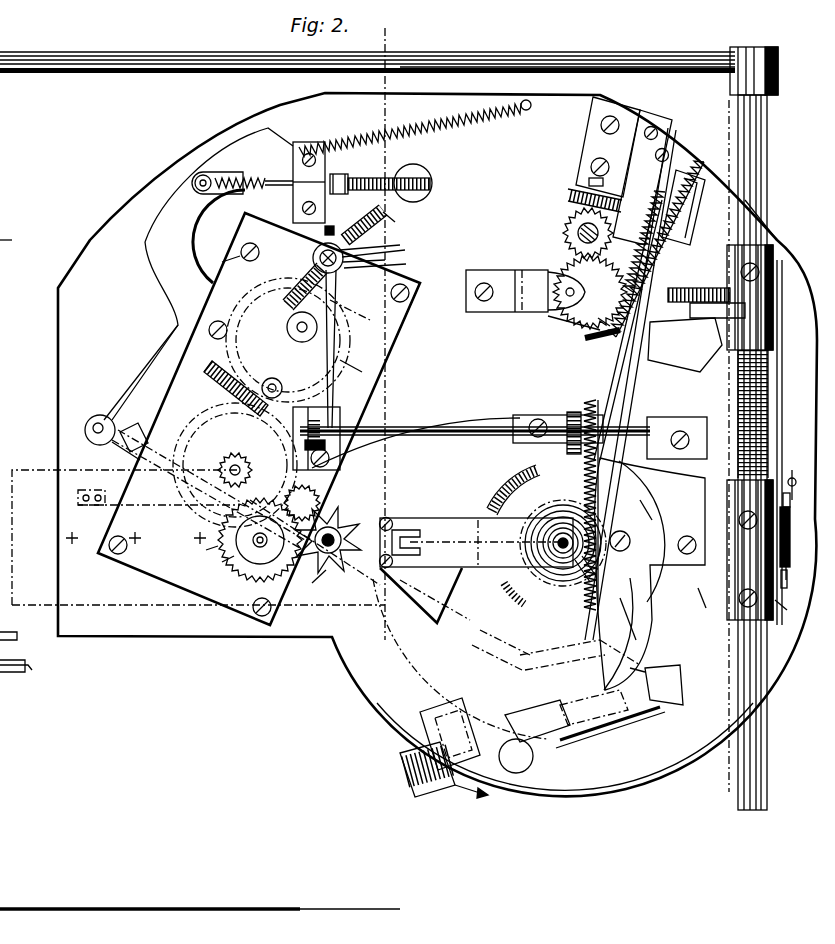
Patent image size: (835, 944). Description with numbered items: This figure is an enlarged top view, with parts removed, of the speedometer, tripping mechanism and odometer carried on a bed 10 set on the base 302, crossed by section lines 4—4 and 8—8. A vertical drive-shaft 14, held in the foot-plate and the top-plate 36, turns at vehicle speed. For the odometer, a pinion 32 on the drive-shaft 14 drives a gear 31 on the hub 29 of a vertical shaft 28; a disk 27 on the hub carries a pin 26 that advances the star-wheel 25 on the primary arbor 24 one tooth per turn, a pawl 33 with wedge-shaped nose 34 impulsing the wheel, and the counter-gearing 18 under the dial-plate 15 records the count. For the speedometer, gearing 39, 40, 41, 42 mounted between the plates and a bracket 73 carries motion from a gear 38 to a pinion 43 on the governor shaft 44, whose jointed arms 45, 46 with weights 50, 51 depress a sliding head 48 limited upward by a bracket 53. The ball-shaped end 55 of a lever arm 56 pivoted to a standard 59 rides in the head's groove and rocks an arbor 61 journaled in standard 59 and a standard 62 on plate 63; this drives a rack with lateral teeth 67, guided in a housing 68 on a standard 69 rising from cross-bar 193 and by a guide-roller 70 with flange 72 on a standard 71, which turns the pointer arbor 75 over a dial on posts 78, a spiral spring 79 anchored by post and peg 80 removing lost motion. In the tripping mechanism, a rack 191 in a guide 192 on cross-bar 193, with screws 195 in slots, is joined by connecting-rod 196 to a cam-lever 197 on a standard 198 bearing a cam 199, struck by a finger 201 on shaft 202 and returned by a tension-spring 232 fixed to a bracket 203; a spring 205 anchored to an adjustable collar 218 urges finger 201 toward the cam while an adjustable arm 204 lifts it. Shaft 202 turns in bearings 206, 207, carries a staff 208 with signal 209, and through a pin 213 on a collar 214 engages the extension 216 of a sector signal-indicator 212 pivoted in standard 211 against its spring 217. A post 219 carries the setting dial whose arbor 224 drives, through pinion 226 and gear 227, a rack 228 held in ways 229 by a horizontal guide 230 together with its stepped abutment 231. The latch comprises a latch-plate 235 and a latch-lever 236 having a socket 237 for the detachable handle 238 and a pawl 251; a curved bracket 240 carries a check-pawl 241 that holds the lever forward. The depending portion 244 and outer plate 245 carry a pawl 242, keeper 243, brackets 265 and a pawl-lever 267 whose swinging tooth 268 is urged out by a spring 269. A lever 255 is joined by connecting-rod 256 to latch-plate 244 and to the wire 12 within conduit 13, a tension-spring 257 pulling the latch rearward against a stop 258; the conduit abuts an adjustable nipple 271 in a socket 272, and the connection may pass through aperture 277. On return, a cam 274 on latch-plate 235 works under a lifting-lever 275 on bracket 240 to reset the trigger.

The section line 4— 4 is at (716, 28).
The section line 8— 8 is at (388, 348).
The bed 10 is at (158, 178).
The steel wire 12 is at (250, 226).
The conduit 13 is at (395, 178).
The drive-shaft 14 is at (235, 465).
The dial-plate 15 is at (22, 482).
The counter-gearing 18 is at (330, 226).
The primary arbor 24 is at (310, 585).
The star-wheel 25 is at (346, 526).
The pin 26 is at (260, 540).
The disk 27 is at (226, 566).
The vertical shaft 28 is at (256, 536).
The hub 29 is at (253, 542).
The gear 31 is at (206, 551).
The pinion 32 is at (248, 462).
The pawl 33 is at (104, 500).
The wedge-shaped nose 34 is at (322, 504).
The top-plate 36 is at (404, 322).
The gear 38 is at (170, 486).
The gearing 39 is at (262, 386).
The gearing 40 is at (288, 340).
The gearing 41 is at (337, 328).
The gearing 42 is at (360, 326).
The pinion 43 is at (386, 257).
The shaft 44 is at (373, 254).
The jointed arm 45 is at (305, 262).
The jointed arm 46 is at (382, 218).
The head 48 is at (395, 248).
The weight 50 is at (292, 318).
The weight 51 is at (366, 215).
The bracket 53 is at (204, 376).
The ball-shaped end 55 is at (345, 270).
The arm 56 is at (352, 368).
The standard 59 is at (340, 446).
The arbor 61 is at (402, 430).
The standard 62 is at (677, 426).
The plate 63 is at (474, 418).
The laterally-projecting teeth 67 is at (577, 472).
The housing 68 is at (569, 505).
The standard 69 is at (478, 520).
The guide-roller 70 is at (570, 415).
The standard 71 is at (537, 416).
The circumferential flange 72 is at (627, 425).
The bracket 73 is at (227, 254).
The arbor 75 is at (622, 534).
The posts 78 is at (10, 275).
The spiral spring 79 is at (549, 518).
The post and peg 80 is at (590, 574).
The rack 191 is at (602, 472).
The guide 192 is at (648, 500).
The cross-bar 193 is at (388, 530).
The screws 195 is at (655, 520).
The connecting-rod 196 is at (630, 392).
The cam-lever 197 is at (596, 342).
The standard 198 is at (692, 368).
The cam 199 is at (690, 252).
The finger 201 is at (600, 322).
The shaft 202 is at (768, 158).
The bracket 203 is at (678, 160).
The adjustable arm 204 is at (708, 288).
The spring 205 is at (770, 412).
The bearing 206 is at (765, 236).
The bearing 207 is at (727, 548).
The staff 208 is at (586, 60).
The signal 209 is at (168, 58).
The standard 211 is at (790, 537).
The signal-indicator 212 is at (783, 365).
The pin 213 is at (781, 588).
The collar 214 is at (775, 612).
The extension 216 is at (787, 575).
The spring 217 is at (792, 476).
The adjustable collar 218 is at (790, 503).
The post 219 is at (588, 183).
The arbor 224 is at (567, 223).
The pinion 226 is at (566, 236).
The gear 227 is at (545, 312).
The rack 228 is at (590, 325).
The guides 229 is at (645, 127).
The horizontal guide 230 is at (580, 188).
The abutment 231 is at (594, 282).
The tension-spring 232 is at (668, 180).
The latch-plate 235 is at (632, 596).
The latch-lever 236 is at (510, 602).
The socket 237 is at (432, 718).
The operating handle 238 is at (400, 771).
The bracket 240 is at (441, 660).
The check-pawl 241 is at (532, 762).
The pawl 242 is at (500, 668).
The keeper 243 is at (537, 722).
The depending portion 244 is at (645, 672).
The outer plate 245 is at (642, 732).
The pawl 251 is at (512, 672).
The lever 255 is at (148, 245).
The connecting-rod 256 is at (122, 446).
The tension-spring 257 is at (360, 147).
The stop 258 is at (500, 592).
The brackets 265 is at (612, 714).
The pawl-lever 267 is at (630, 624).
The swinging tooth 268 is at (680, 684).
The spring 269 is at (632, 661).
The adjustable nipple 271 is at (340, 175).
The socket 272 is at (293, 145).
The cam 274 is at (512, 492).
The lifting-lever 275 is at (420, 530).
The aperture 277 is at (428, 174).
The base 302 is at (36, 665).